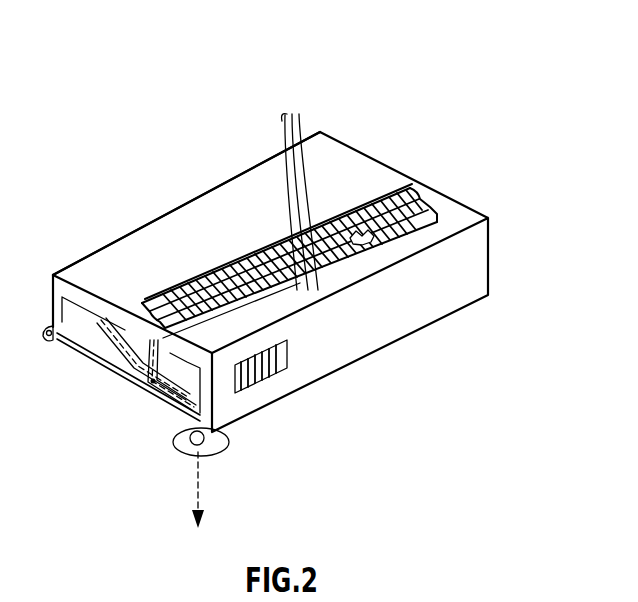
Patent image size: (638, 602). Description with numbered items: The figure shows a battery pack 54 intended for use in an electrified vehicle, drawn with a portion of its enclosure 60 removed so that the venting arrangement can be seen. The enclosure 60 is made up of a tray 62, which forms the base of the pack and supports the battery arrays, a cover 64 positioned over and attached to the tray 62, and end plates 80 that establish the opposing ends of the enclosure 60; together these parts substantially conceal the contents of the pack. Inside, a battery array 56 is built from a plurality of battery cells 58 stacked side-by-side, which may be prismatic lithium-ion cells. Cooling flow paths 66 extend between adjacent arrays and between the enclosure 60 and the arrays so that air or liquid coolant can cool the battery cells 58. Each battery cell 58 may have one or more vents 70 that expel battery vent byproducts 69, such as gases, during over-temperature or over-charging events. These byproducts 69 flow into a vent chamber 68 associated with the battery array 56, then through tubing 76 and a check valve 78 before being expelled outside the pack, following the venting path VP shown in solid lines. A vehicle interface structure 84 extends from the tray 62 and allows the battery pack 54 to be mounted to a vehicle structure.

The battery pack 54 is at (308, 78).
The battery array 56 is at (379, 192).
The battery cell 58 is at (425, 237).
The enclosure 60 is at (231, 170).
The tray 62 is at (82, 355).
The cover 64 is at (105, 273).
The cooling flow path 66 is at (276, 376).
The vent chamber 68 is at (403, 247).
The battery vent byproducts 69 is at (284, 201).
The vent 70 is at (380, 245).
The tubing 76 is at (148, 352).
The check valve 78 is at (224, 437).
The end plate 80 is at (483, 258).
The vehicle interface structure 84 is at (219, 457).
The venting path VP is at (128, 337).